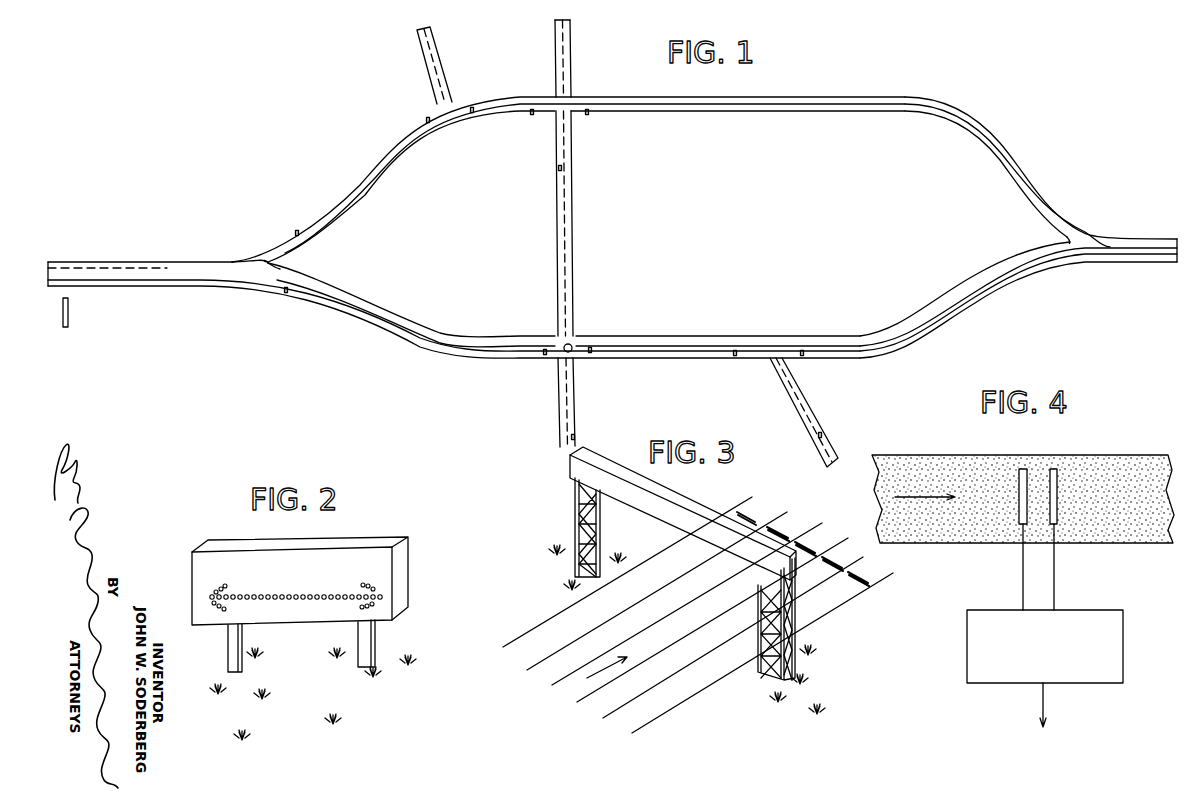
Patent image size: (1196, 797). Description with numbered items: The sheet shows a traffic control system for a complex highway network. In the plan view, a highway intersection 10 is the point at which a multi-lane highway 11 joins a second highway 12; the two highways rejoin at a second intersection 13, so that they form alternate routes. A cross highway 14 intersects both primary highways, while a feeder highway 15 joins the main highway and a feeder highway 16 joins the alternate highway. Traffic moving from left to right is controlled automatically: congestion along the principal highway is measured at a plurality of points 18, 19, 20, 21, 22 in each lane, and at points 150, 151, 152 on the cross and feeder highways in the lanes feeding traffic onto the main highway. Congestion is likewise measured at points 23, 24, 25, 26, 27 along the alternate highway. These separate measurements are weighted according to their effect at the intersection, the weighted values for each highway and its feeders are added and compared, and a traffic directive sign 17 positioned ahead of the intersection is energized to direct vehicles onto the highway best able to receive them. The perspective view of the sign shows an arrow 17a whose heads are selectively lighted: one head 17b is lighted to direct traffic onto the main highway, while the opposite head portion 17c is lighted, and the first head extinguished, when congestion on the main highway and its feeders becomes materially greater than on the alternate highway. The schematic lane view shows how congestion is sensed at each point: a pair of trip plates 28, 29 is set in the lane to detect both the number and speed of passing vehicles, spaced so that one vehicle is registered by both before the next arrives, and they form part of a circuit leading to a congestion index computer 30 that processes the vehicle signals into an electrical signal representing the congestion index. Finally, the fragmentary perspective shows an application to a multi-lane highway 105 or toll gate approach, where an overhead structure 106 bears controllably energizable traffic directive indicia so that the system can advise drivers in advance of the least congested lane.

In FIG. 1, the highway intersection 10 is at (232, 268).
In FIG. 1, the multi-lane highway 11 is at (97, 273).
In FIG. 1, the second highway 12 is at (345, 199).
In FIG. 1, the second intersection 13 is at (1102, 240).
In FIG. 1, the cross highway 14 is at (578, 297).
In FIG. 1, the feeder highway 15 is at (807, 410).
In FIG. 1, the feeder highway 16 is at (435, 50).
In FIG. 1, the traffic directive sign 17 is at (68, 308).
In FIG. 2, the traffic directive sign 17 is at (348, 544).
In FIG. 2, the arrow 17a is at (300, 600).
In FIG. 2, the arrow head 17b is at (381, 595).
In FIG. 2, the arrow head portion 17c is at (209, 595).
In FIG. 1, the congestion measurement point 18 is at (288, 295).
In FIG. 1, the congestion measurement point 19 is at (545, 357).
In FIG. 1, the congestion measurement point 20 is at (590, 355).
In FIG. 1, the congestion measurement point 21 is at (735, 358).
In FIG. 1, the congestion measurement point 22 is at (804, 357).
In FIG. 1, the congestion measurement point 23 is at (298, 229).
In FIG. 1, the congestion measurement point 24 is at (427, 117).
In FIG. 1, the congestion measurement point 25 is at (485, 91).
In FIG. 1, the congestion measurement point 26 is at (533, 108).
In FIG. 1, the congestion measurement point 27 is at (590, 109).
In FIG. 4, the trip plate 28 is at (1021, 468).
In FIG. 4, the trip plate 29 is at (1054, 468).
In FIG. 4, the congestion index computer 30 is at (1122, 656).
In FIG. 3, the multi-lane highway 105 is at (684, 690).
In FIG. 3, the overhead structure 106 is at (674, 505).
In FIG. 1, the congestion measurement point 150 is at (575, 436).
In FIG. 1, the congestion measurement point 151 is at (557, 168).
In FIG. 1, the congestion measurement point 152 is at (822, 432).